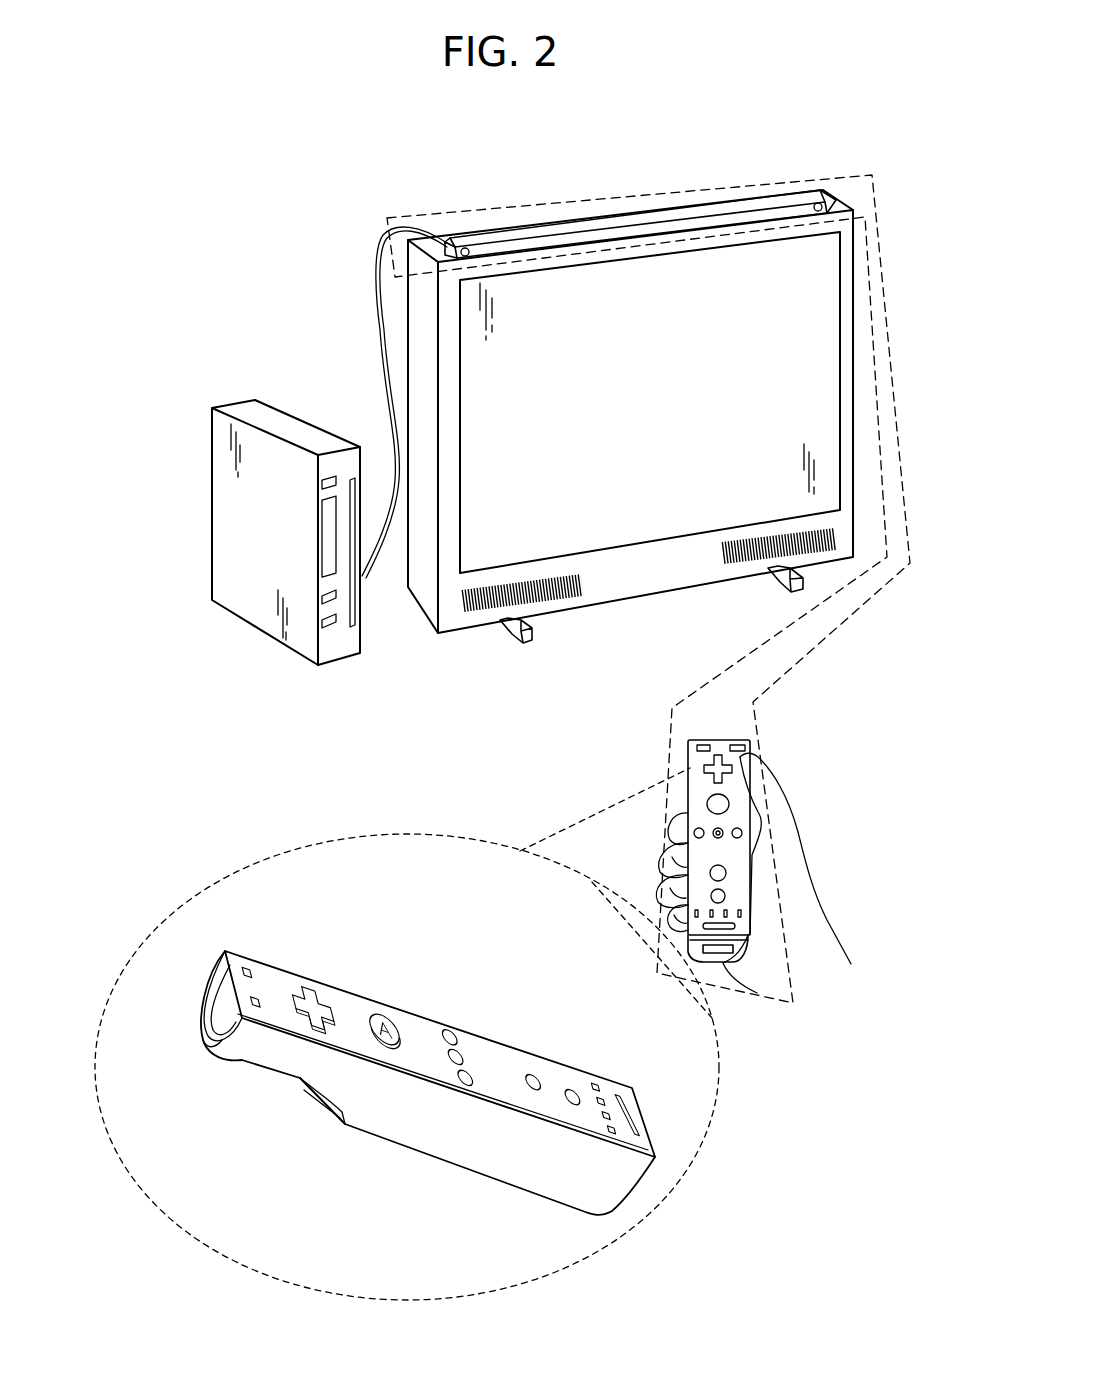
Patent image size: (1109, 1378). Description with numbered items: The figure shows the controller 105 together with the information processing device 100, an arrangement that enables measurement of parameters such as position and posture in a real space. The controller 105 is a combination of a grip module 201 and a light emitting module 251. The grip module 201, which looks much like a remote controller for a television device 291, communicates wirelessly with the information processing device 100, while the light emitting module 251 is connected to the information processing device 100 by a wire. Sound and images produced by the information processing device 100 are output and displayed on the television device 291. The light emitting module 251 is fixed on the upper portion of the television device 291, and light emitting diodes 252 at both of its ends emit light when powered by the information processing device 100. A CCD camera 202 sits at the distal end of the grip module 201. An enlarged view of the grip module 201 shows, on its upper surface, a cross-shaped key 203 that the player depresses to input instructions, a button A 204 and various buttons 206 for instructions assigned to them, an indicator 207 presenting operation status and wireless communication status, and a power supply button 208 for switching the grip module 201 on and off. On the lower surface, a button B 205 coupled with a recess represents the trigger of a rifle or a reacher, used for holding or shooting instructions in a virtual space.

The information processing device 100 is at (282, 416).
The controller 105 is at (755, 715).
The grip module 201 is at (686, 745).
The CCD camera 202 is at (206, 1019).
The cross-shaped key 203 is at (313, 1009).
The button A 204 is at (385, 1031).
The button B 205 is at (302, 1108).
The various buttons 206 is at (513, 1077).
The indicator 207 is at (616, 1112).
The power supply button 208 is at (251, 987).
The light emitting module 251 is at (580, 215).
The light emitting diodes 252 is at (466, 246).
The television device 291 is at (850, 333).